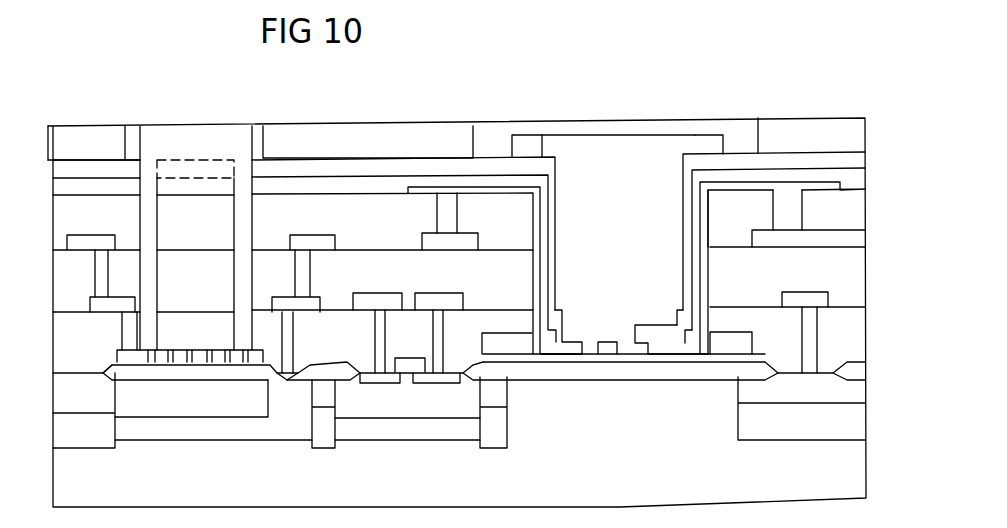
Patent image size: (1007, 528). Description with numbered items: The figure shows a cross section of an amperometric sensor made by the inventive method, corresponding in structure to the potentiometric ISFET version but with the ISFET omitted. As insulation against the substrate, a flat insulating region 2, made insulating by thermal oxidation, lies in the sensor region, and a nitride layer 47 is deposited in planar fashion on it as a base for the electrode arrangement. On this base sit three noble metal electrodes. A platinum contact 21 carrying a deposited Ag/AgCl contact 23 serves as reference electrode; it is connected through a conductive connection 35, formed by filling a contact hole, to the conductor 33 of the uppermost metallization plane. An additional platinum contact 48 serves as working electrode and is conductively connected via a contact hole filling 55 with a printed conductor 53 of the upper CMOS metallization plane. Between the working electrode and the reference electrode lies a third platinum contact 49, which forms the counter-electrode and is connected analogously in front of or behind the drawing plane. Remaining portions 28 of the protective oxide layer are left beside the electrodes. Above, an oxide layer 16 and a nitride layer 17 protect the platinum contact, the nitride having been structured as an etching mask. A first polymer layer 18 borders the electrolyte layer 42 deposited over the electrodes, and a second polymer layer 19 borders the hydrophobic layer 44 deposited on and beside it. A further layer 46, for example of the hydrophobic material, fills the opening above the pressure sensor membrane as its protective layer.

The insulating region 2 is at (580, 370).
The SiO2 layer 16 is at (327, 182).
The Si3N4 layer 17 is at (369, 170).
The first polymer layer 18 is at (528, 148).
The second polymer layer 19 is at (86, 145).
The platinum contact 21 is at (760, 190).
The Ag/AgCl contact 23 is at (652, 333).
The remaining portions of the oxide layer 28 is at (517, 343).
The conductor 33 is at (808, 245).
The conductive connection 35 is at (786, 214).
The electrolyte layer 42 is at (620, 233).
The hydrophobic layer 44 is at (595, 128).
The further layer 46 is at (192, 138).
The nitride layer 47 is at (670, 358).
The additional platinum contact 48 is at (557, 372).
The third platinum contact 49 is at (607, 340).
The printed conductor 53 is at (466, 243).
The contact hole filling 55 is at (447, 211).